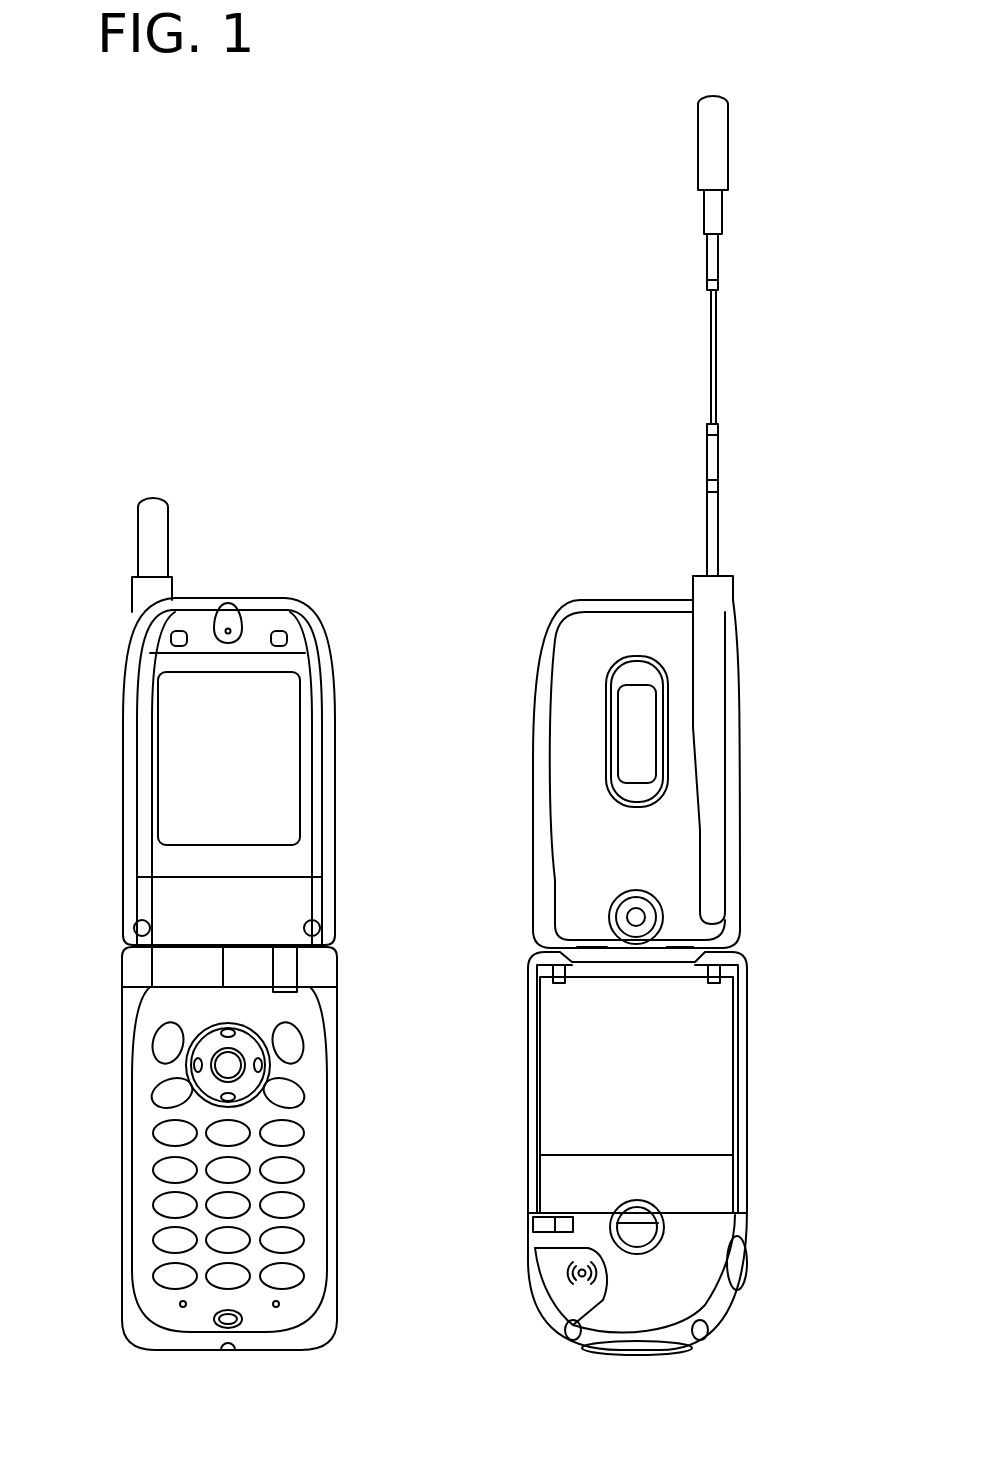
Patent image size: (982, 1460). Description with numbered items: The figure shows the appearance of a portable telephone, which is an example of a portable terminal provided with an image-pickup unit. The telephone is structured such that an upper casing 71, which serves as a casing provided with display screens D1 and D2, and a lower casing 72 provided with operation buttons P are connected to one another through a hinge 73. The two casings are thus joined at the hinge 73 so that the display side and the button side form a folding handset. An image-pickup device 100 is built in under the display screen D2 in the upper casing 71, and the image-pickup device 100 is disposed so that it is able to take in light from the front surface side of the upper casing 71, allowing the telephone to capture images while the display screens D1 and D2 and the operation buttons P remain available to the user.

The upper casing 71 is at (322, 634).
The lower casing 72 is at (337, 1152).
The hinge 73 is at (173, 963).
The display screen D1 is at (283, 745).
The display screen D2 is at (640, 752).
The operation buttons P is at (153, 1170).
The image-pickup device 100 is at (614, 915).